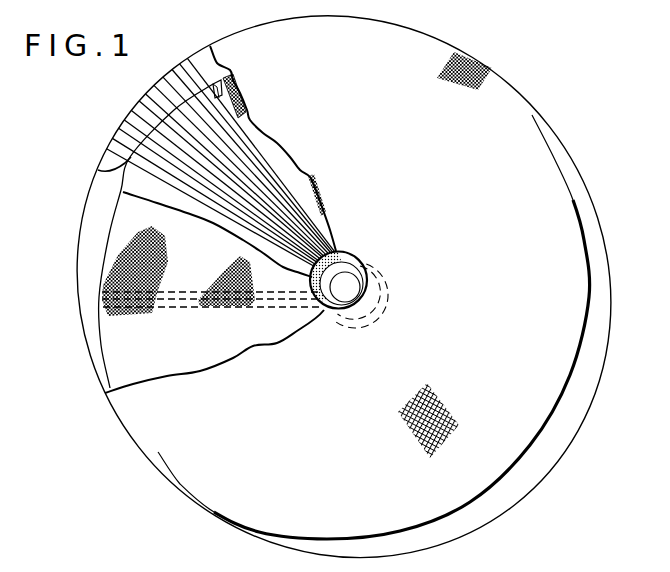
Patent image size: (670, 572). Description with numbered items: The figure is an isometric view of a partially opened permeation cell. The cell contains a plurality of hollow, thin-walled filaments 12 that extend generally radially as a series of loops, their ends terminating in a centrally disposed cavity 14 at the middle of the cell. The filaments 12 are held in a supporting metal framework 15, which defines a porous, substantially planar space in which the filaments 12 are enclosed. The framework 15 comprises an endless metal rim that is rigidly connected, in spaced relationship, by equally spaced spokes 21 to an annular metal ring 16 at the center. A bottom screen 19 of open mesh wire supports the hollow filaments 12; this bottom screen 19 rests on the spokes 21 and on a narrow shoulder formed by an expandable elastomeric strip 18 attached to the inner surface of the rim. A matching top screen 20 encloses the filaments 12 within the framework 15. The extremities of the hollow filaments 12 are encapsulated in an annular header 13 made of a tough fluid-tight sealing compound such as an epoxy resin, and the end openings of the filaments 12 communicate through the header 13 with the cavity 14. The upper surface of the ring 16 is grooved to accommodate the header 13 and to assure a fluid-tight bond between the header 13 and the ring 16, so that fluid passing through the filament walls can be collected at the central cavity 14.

The hollow, thin-walled filaments 12 is at (98, 170).
The annular header 13 is at (338, 252).
The centrally disposed cavity 14 is at (344, 300).
The supporting metal framework 15 is at (559, 238).
The annular metal ring 16 is at (326, 288).
The expandable elastomeric strip 18 is at (213, 83).
The bottom screen 19 is at (118, 238).
The top screen 20 is at (478, 73).
The spokes 21 is at (181, 299).